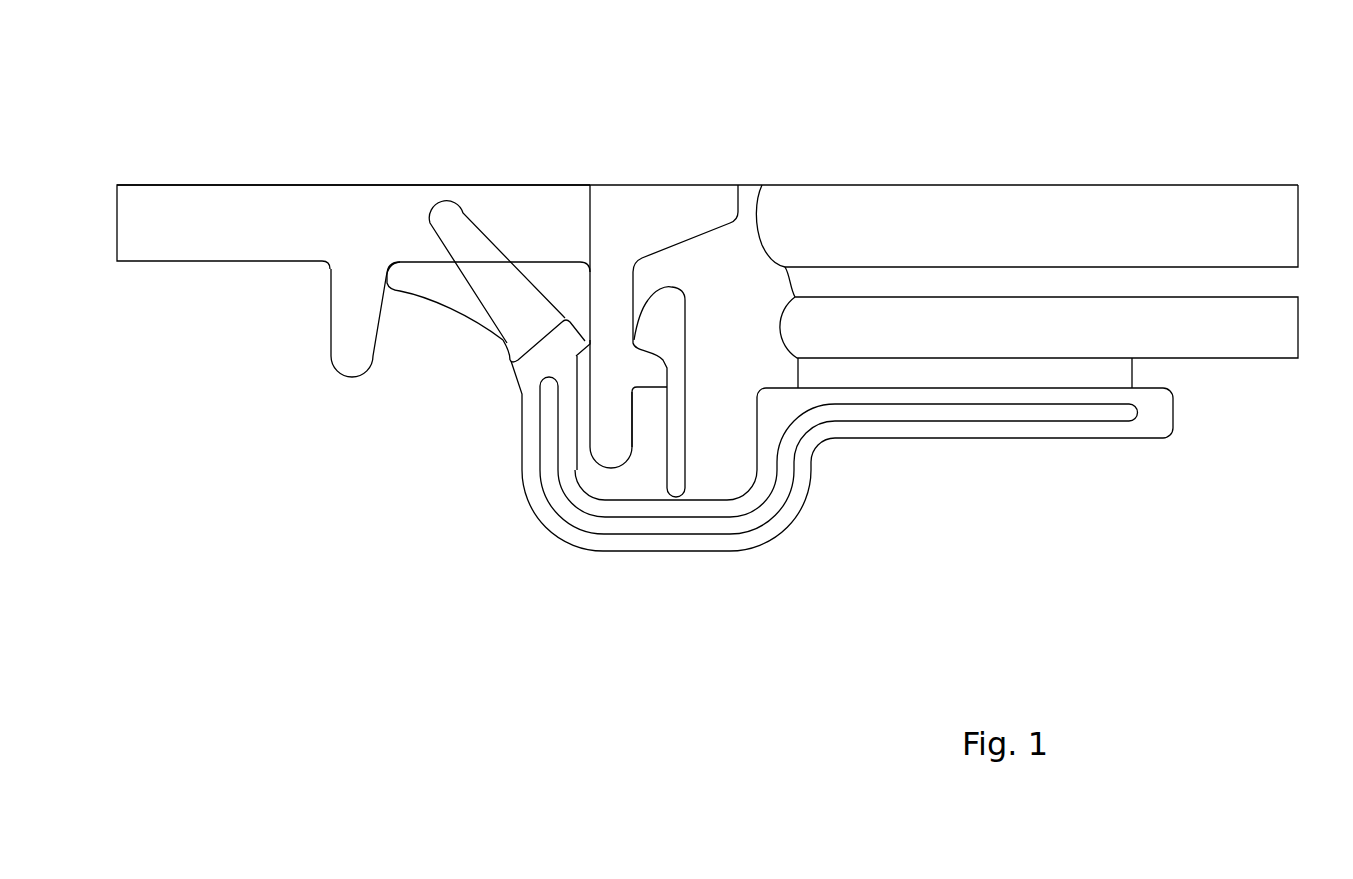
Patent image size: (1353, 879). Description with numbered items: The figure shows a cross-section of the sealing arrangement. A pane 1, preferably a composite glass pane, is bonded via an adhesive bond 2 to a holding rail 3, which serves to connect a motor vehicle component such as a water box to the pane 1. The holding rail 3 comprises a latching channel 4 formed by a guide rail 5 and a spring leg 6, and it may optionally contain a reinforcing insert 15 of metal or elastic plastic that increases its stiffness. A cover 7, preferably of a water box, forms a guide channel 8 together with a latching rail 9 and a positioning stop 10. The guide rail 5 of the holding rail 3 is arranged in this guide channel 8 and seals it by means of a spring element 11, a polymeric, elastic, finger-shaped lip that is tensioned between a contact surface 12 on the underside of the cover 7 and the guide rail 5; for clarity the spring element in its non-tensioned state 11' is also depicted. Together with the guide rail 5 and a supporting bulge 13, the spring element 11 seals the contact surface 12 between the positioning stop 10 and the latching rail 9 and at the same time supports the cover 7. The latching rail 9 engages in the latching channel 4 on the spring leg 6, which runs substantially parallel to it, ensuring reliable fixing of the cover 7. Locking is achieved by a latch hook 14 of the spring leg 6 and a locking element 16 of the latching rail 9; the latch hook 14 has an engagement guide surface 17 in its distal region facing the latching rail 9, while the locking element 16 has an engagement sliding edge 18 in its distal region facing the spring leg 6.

The pane 1 is at (1225, 327).
The adhesive bond 2 is at (1030, 373).
The holding rail 3 is at (832, 436).
The latching channel 4 is at (605, 493).
The guide rail 5 is at (540, 350).
The spring leg 6 is at (680, 453).
The cover 7 is at (233, 205).
The guide channel 8 is at (419, 377).
The latching rail 9 is at (613, 292).
The positioning stop 10 is at (350, 333).
The spring element 11 is at (488, 220).
The spring element in non-tensioned state 11' is at (464, 211).
The contact surface 12 is at (542, 280).
The supporting bulge 13 is at (580, 340).
The latch hook 14 is at (648, 333).
The reinforcing insert 15 is at (966, 405).
The locking element 16 is at (643, 373).
The engagement guide surface 17 is at (664, 292).
The engagement sliding edge 18 is at (663, 373).